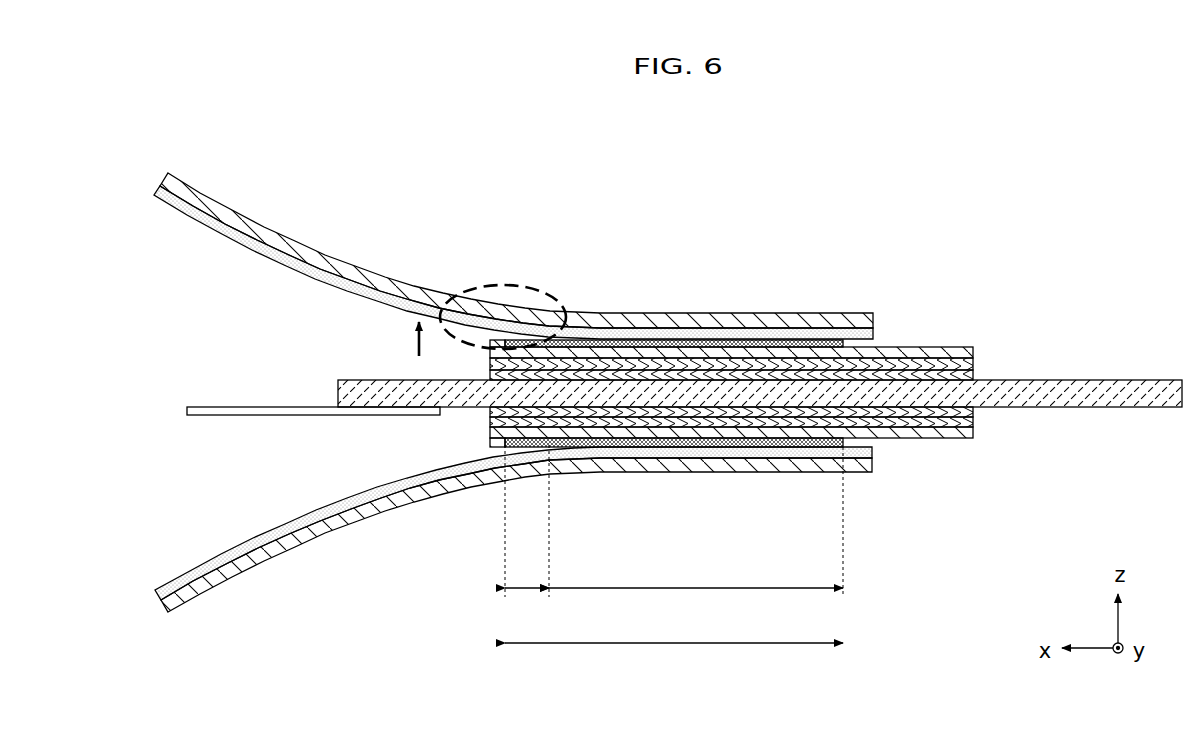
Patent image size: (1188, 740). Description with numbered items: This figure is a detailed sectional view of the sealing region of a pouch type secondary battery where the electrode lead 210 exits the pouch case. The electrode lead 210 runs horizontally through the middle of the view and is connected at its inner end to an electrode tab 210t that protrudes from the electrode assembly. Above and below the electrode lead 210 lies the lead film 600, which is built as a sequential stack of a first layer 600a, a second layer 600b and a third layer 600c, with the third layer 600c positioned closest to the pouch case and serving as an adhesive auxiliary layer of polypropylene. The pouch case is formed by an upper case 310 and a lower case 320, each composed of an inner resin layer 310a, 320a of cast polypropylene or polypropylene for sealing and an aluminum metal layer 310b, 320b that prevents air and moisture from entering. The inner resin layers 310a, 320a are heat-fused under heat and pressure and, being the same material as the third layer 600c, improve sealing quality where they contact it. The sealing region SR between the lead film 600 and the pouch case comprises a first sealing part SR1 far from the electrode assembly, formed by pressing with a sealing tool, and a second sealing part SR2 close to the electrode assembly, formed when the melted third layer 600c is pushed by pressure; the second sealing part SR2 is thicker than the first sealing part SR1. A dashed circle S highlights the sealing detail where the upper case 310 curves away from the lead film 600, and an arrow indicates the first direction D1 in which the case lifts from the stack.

The upper case 310 is at (513, 241).
The inner resin layer 310a is at (405, 178).
The metal layer 310b is at (371, 278).
The lower case 320 is at (513, 549).
The inner resin layer 320a is at (305, 519).
The metal layer 320b is at (372, 508).
The lead film 600 is at (753, 313).
The first layer 600a is at (731, 326).
The second layer 600b is at (920, 363).
The third layer 600c is at (945, 353).
The electrode lead 210 is at (1112, 400).
The electrode tab 210t is at (233, 408).
The sealing region detail S is at (498, 285).
The first direction D1 is at (400, 340).
The sealing region SR is at (674, 658).
The first sealing part SR1 is at (696, 604).
The second sealing part SR2 is at (526, 604).